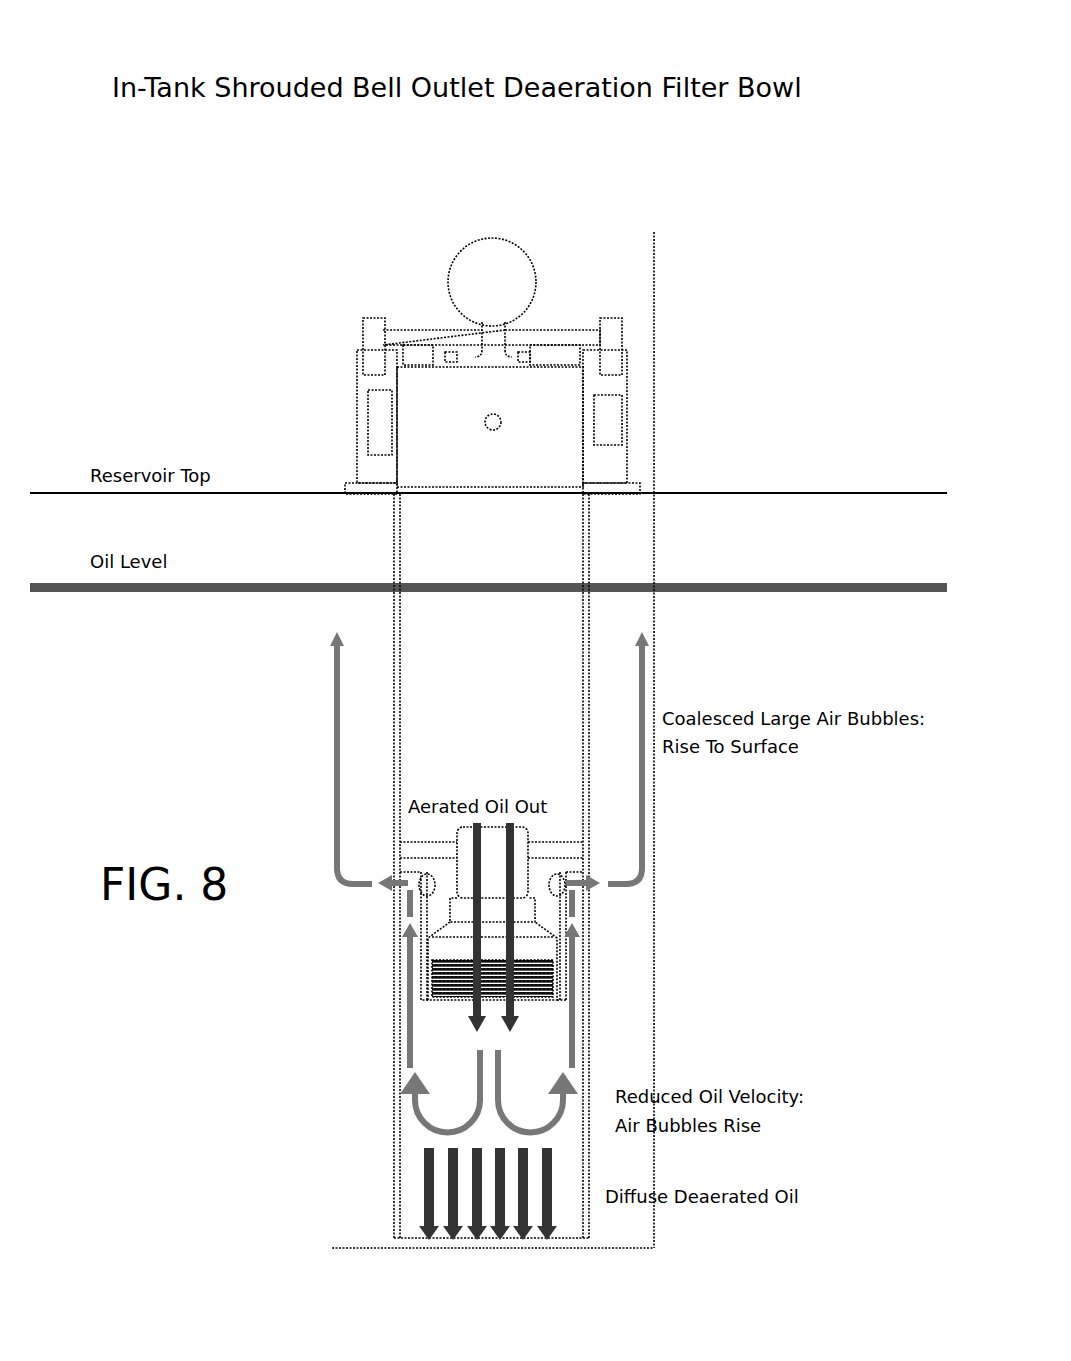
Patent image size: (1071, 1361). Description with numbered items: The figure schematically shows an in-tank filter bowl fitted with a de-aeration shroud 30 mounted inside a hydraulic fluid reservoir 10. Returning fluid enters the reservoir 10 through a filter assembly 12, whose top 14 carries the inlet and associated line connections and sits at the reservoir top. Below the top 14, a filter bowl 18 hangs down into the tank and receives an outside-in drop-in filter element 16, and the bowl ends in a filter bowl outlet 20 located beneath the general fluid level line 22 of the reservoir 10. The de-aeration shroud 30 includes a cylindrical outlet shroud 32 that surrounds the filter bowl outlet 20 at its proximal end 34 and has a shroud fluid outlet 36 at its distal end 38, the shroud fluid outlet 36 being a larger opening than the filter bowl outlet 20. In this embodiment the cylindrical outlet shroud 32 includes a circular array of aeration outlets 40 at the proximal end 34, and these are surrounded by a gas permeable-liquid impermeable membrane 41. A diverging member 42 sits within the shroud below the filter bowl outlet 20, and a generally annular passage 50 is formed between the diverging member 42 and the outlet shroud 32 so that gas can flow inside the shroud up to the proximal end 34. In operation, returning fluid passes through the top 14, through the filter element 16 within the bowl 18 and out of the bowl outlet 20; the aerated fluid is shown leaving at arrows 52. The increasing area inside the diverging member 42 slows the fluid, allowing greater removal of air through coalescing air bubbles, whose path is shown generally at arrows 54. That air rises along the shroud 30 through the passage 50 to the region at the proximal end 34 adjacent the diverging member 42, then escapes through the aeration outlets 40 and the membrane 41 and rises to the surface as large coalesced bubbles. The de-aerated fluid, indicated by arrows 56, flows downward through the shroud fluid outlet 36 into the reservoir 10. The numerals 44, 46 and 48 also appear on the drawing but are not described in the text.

The reservoir 10 is at (811, 492).
The filter assembly 12 is at (760, 295).
The top 14 is at (460, 467).
The filter element 16 is at (410, 848).
The filter bowl 18 is at (589, 537).
The filter bowl outlet 20 is at (537, 845).
The fluid level line 22 is at (738, 583).
The de-aeration shroud 30 is at (688, 926).
The cylindrical outlet shroud 32 is at (574, 1042).
The proximal end 34 is at (576, 884).
The shroud fluid outlet 36 is at (572, 1245).
The distal end 38 is at (584, 1236).
The aeration outlets 40 is at (560, 874).
The gas permeable-liquid impermeable membrane 41 is at (382, 890).
The diverging member 42 is at (567, 940).
The upper port 44 is at (408, 880).
The filter element 46 is at (548, 1016).
The outlet flow 48 is at (516, 1003).
The annular passage 50 is at (408, 994).
The arrows 52 is at (458, 1003).
The arrows 54 is at (334, 770).
The arrows 56 is at (470, 1242).